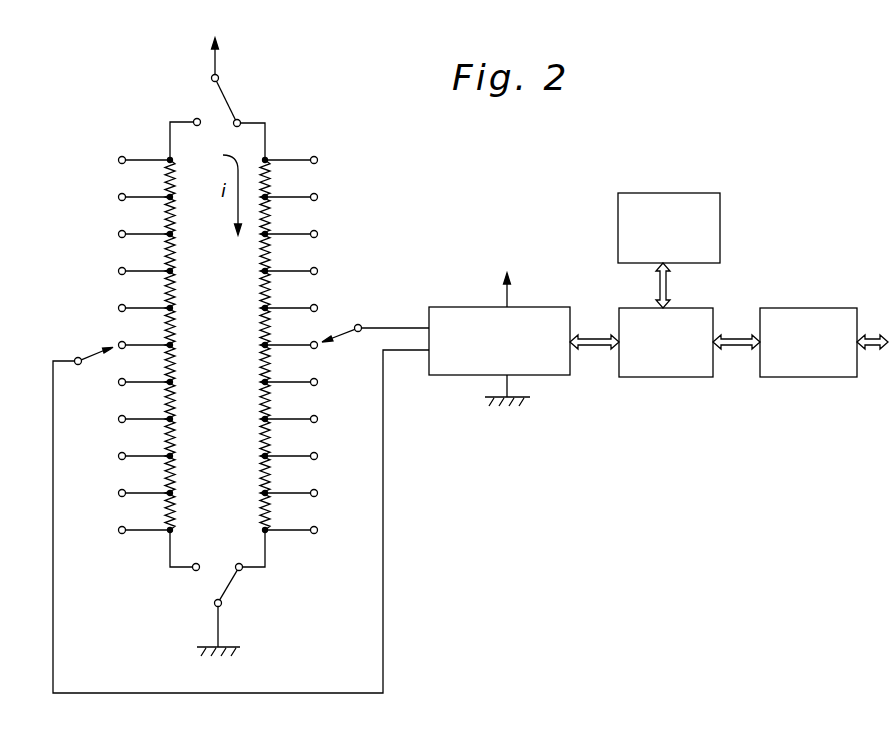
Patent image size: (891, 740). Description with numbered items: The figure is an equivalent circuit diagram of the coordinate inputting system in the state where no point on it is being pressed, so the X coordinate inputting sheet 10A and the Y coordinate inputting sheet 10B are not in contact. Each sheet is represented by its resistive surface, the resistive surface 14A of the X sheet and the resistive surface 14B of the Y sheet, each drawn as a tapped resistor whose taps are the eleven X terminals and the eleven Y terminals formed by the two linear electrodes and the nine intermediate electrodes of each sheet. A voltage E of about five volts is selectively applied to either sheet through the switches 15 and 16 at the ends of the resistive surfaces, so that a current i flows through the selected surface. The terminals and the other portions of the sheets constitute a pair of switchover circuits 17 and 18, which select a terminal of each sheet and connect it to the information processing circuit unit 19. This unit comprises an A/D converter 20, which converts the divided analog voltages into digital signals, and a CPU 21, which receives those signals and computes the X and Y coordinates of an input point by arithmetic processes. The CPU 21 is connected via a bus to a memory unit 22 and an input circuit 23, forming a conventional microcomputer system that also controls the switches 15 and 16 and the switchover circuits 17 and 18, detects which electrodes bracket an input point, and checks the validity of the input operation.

The X coordinate inputting sheet 10A is at (265, 136).
The Y coordinate inputting sheet 10B is at (170, 136).
The resistive surface of the X coordinate inputting sheet 14A is at (262, 380).
The resistive surface of the Y coordinate inputting sheet 14B is at (172, 333).
The switch 15 is at (230, 103).
The switch 16 is at (225, 587).
The switchover circuit 17 is at (326, 295).
The switchover circuit 18 is at (106, 282).
The information processing circuit unit 19 is at (637, 412).
The A/D converter 20 is at (548, 377).
The CPU 21 is at (642, 377).
The memory unit 22 is at (708, 193).
The input circuit 23 is at (808, 308).